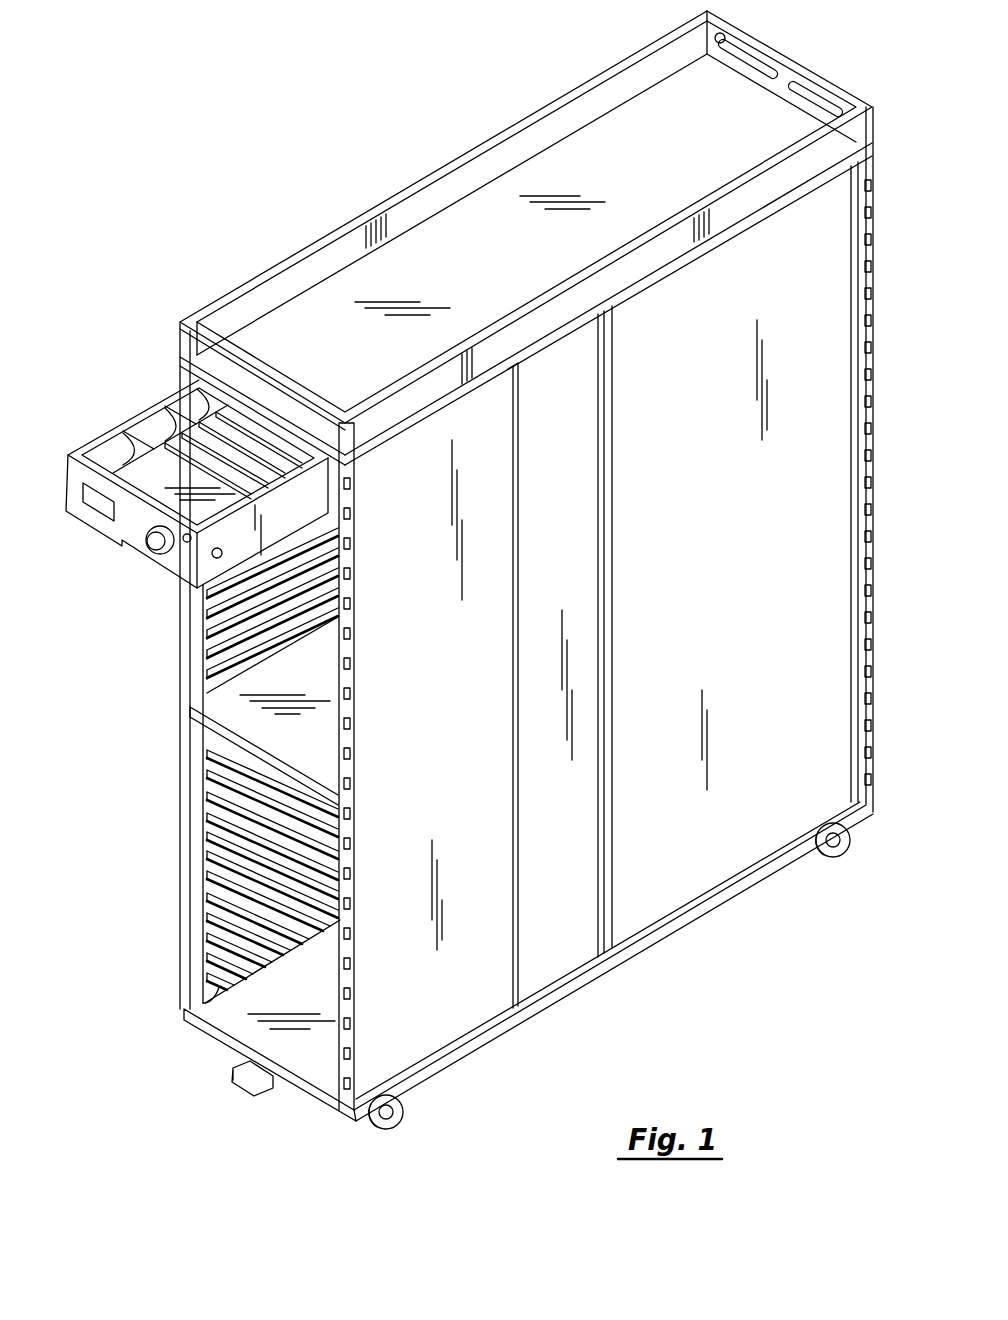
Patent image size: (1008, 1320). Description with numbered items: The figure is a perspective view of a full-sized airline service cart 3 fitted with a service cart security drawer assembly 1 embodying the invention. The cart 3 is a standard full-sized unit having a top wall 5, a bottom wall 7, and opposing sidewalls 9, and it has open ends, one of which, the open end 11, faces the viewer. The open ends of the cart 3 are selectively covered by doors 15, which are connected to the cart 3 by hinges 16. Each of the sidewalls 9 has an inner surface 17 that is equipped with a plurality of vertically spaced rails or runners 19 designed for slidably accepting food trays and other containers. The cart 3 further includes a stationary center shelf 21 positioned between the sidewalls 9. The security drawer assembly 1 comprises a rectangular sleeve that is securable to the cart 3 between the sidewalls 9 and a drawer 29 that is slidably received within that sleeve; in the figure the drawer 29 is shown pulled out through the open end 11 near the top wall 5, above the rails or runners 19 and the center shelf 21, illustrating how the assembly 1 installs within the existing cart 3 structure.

The service cart security drawer assembly 1 is at (138, 384).
The airline service cart 3 is at (340, 228).
The top wall 5 is at (324, 326).
The bottom wall 7 is at (296, 1088).
The sidewalls 9 is at (742, 822).
The open end 11 is at (253, 1014).
The doors 15 is at (519, 916).
The hinges 16 is at (356, 620).
The inner surface 17 is at (203, 1003).
The rails or runners 19 is at (212, 854).
The stationary center shelf 21 is at (207, 699).
The drawer 29 is at (134, 552).